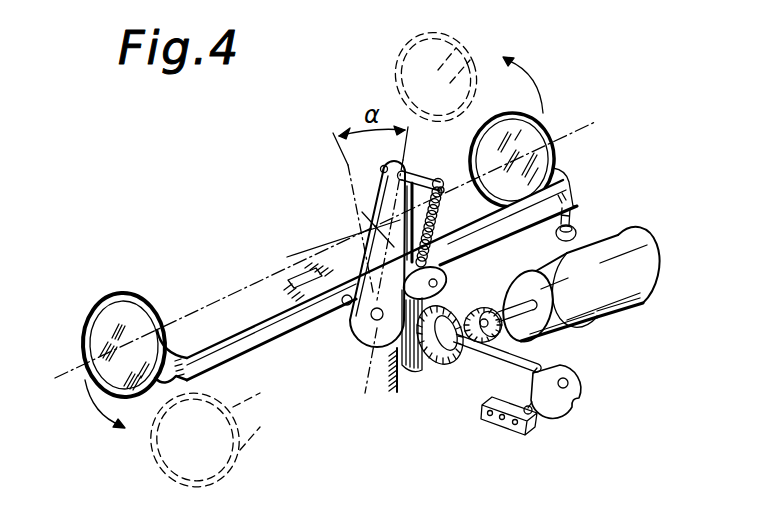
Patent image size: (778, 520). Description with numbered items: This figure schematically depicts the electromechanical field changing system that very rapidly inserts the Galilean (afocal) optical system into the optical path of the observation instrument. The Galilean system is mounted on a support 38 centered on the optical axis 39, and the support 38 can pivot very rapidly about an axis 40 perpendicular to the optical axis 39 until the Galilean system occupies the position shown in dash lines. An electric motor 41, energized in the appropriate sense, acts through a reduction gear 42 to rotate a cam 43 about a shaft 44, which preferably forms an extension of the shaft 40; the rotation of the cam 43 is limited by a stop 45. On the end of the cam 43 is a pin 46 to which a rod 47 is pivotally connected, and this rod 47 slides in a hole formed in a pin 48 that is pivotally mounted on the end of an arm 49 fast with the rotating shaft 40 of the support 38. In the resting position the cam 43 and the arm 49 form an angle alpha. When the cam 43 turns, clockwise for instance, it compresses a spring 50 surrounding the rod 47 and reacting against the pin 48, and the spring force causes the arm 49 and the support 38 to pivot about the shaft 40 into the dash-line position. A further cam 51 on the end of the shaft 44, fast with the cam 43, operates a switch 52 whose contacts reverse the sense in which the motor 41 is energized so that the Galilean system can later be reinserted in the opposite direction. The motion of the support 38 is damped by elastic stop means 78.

The support 38 is at (259, 349).
The optical axis 39 is at (66, 378).
The axis 40 is at (305, 266).
The electric motor 41 is at (645, 298).
The reduction gear 42 is at (580, 325).
The cam 43 is at (410, 340).
The shaft 44 is at (497, 360).
The stop 45 is at (400, 378).
The pin 46 is at (366, 255).
The rod 47 is at (504, 167).
The pin 48 is at (418, 181).
The arm 49 is at (366, 200).
The spring 50 is at (462, 264).
The cam 51 is at (578, 400).
The switch 52 is at (489, 428).
The elastic stop means 78 is at (579, 229).